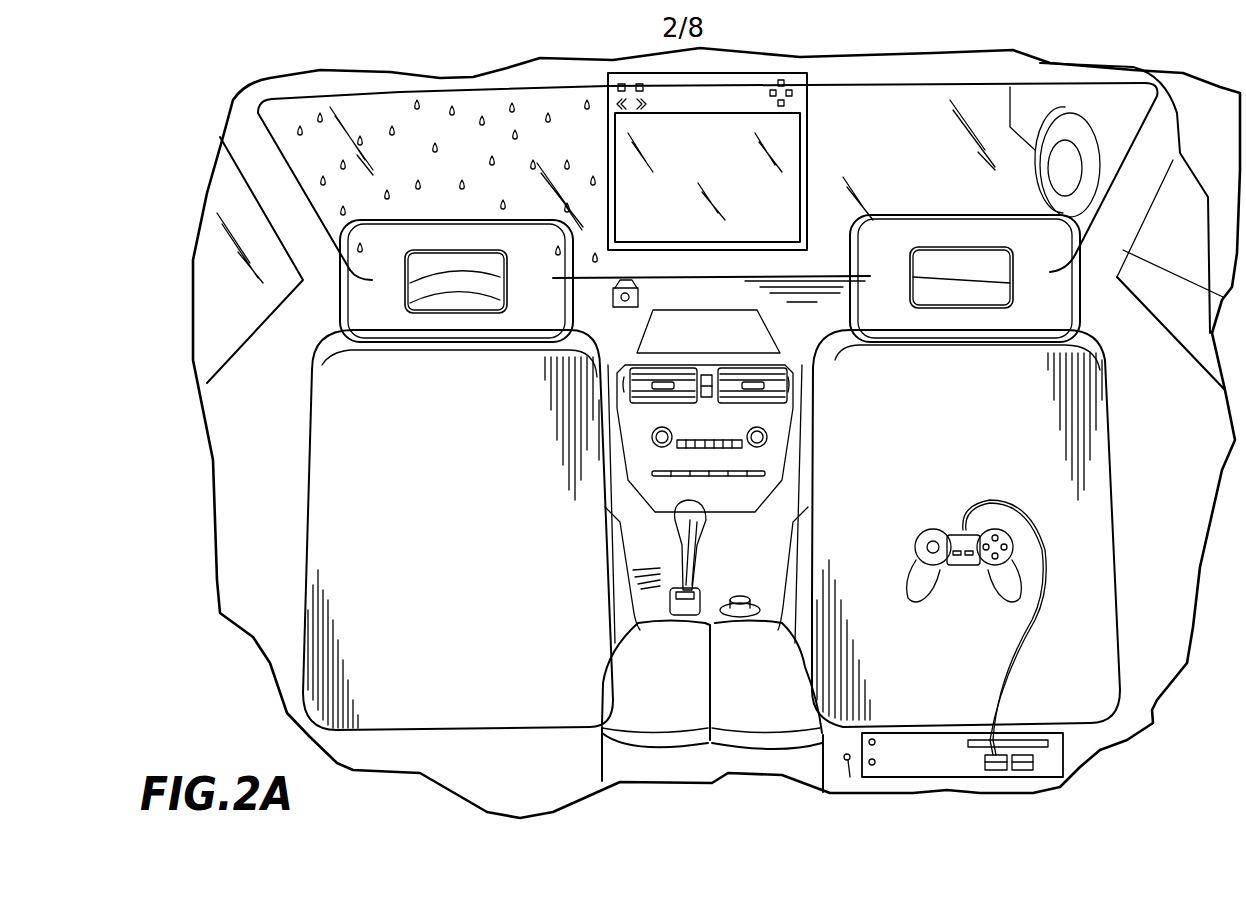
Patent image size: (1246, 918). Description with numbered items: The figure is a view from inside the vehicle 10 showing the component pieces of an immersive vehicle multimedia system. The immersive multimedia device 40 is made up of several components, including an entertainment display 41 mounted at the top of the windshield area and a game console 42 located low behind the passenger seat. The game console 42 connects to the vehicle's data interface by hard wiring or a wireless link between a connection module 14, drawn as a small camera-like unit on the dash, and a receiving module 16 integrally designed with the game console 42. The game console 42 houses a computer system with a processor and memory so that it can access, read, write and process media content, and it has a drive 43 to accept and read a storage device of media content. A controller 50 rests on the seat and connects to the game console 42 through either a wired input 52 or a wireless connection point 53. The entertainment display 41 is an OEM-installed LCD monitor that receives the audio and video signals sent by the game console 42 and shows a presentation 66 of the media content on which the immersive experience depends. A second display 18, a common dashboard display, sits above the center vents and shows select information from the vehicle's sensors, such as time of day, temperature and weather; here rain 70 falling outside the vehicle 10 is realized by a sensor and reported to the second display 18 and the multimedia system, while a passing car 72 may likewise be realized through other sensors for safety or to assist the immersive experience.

The vehicle 10 is at (1150, 163).
The connection module 14 is at (640, 296).
The receiving module 16 is at (847, 762).
The second display 18 is at (770, 322).
The immersive multimedia device 40 is at (986, 759).
The entertainment display 41 is at (709, 139).
The game console 42 is at (1053, 767).
The drive 43 is at (1028, 740).
The controller 50 is at (1007, 497).
The wired input 52 is at (983, 757).
The wireless connection point 53 is at (875, 762).
The presentation 66 is at (692, 169).
The rain 70 is at (373, 120).
The passing car 72 is at (1027, 113).